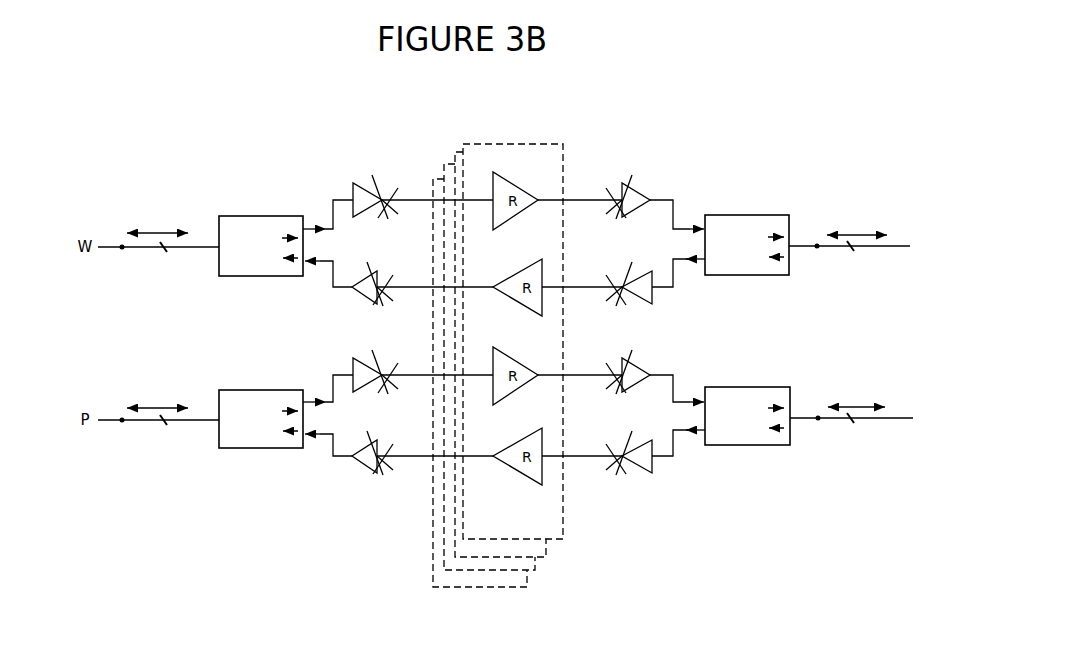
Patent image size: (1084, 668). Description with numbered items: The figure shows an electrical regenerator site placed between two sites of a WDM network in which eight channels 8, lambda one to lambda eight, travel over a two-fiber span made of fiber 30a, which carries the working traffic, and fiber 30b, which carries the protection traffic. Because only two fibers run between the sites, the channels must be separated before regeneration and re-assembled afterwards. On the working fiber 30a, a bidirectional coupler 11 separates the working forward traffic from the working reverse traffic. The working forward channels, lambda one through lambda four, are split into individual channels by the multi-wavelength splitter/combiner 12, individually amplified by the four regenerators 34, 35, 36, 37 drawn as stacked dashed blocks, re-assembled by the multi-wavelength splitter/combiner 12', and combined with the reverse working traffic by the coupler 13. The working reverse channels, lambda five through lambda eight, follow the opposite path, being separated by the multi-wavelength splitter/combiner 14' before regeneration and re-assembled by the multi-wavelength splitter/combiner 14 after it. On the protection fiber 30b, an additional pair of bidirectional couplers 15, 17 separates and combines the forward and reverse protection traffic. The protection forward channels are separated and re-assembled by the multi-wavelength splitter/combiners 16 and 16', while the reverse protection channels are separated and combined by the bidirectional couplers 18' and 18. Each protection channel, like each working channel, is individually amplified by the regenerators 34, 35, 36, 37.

The channels 8 is at (507, 341).
The bidirectional coupler 11 is at (262, 277).
The multi-wavelength splitter/combiner 12 is at (377, 184).
The multi-wavelength splitter/combiner 12' is at (635, 182).
The coupler 13 is at (773, 215).
The multi-wavelength splitter/combiner 14 is at (376, 270).
The multi-wavelength splitter/combiner 14' is at (627, 270).
The bidirectional coupler 15 is at (258, 449).
The multi-wavelength splitter/combiner 16 is at (377, 359).
The multi-wavelength splitter/combiner 16' is at (644, 361).
The bidirectional coupler 17 is at (782, 446).
The bidirectional coupler 18 is at (377, 441).
The bidirectional coupler 18' is at (655, 466).
The fiber 30a is at (895, 246).
The fiber 30b is at (895, 418).
The regenerator 34 is at (503, 143).
The regenerator 35 is at (548, 542).
The regenerator 36 is at (490, 565).
The regenerator 37 is at (448, 586).